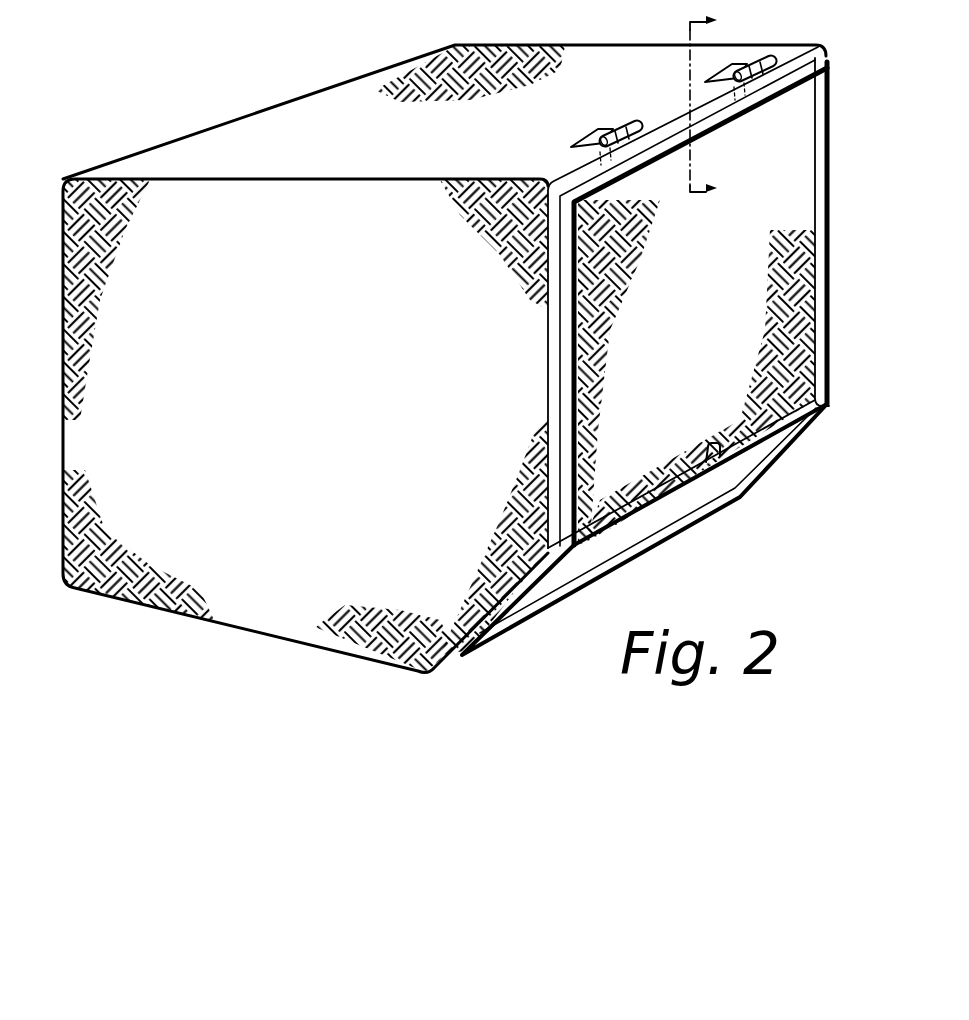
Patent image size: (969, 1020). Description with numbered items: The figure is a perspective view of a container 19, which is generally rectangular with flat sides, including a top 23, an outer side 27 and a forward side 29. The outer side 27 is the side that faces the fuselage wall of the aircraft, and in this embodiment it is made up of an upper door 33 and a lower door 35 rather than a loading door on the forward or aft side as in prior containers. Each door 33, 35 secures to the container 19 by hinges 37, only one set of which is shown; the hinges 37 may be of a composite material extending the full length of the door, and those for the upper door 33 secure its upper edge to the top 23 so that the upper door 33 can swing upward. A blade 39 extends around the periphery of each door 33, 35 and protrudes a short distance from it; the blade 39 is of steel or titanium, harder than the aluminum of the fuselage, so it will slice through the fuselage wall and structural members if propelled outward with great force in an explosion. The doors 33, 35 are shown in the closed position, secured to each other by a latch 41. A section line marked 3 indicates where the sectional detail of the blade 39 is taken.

The container 19 is at (471, 337).
The top 23 is at (331, 100).
The outer side 27 is at (705, 365).
The forward side 29 is at (295, 506).
The upper door 33 is at (713, 297).
The lower door 35 is at (751, 470).
The hinges 37 is at (742, 66).
The blade 39 is at (818, 110).
The latch 41 is at (704, 478).
The section line 3- 3 is at (713, 106).